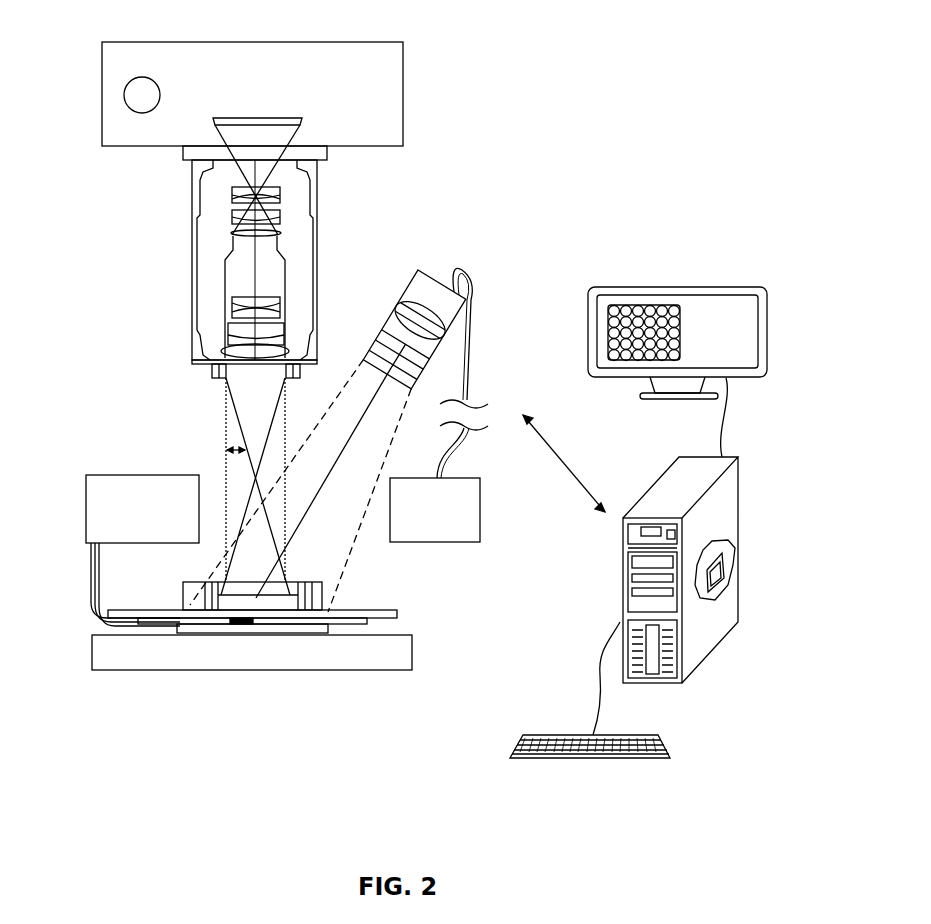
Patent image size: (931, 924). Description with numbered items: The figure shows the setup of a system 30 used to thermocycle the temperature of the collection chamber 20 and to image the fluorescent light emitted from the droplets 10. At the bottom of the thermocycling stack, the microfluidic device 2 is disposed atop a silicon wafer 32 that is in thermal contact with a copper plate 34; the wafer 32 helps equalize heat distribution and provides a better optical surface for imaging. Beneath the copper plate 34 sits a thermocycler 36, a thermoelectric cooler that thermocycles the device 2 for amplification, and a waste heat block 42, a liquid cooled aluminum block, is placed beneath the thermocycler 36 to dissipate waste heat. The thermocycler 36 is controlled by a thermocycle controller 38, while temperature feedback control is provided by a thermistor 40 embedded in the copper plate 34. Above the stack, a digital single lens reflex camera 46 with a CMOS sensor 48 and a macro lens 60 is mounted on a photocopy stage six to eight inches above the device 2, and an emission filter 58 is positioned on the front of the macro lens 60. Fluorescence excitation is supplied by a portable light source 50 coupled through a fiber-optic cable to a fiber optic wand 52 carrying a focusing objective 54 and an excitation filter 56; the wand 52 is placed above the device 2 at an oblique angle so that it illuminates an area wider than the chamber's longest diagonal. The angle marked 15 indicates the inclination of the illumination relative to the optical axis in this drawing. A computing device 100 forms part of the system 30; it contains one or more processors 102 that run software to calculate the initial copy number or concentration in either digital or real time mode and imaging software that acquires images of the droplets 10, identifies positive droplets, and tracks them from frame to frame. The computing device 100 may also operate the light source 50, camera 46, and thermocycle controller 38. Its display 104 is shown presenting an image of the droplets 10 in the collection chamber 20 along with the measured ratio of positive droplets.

The microfluidic device 2 is at (306, 590).
The droplets 10 is at (672, 308).
The 15 degree angle 15 is at (238, 450).
The collection chamber 20 is at (630, 303).
The system 30 is at (418, 748).
The silicon wafer 32 is at (355, 616).
The copper plate 34 is at (375, 618).
The thermocycler 36 is at (330, 628).
The thermocycle controller 38 is at (86, 512).
The thermistor 40 is at (243, 628).
The waste heat block 42 is at (118, 648).
The camera 46 is at (152, 42).
The CMOS sensor 48 is at (272, 118).
The light source 50 is at (458, 527).
The fiber optic wand 52 is at (430, 282).
The focusing objective 54 is at (402, 300).
The excitation filter 56 is at (380, 332).
The emission filter 58 is at (246, 372).
The macro lens 60 is at (192, 262).
The computing device 100 is at (707, 640).
The processors 102 is at (718, 565).
The display 104 is at (700, 288).